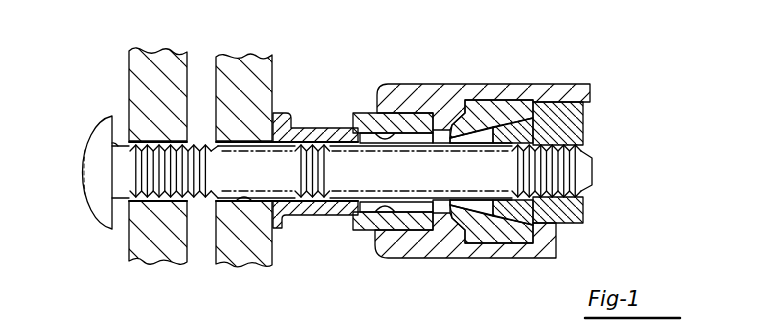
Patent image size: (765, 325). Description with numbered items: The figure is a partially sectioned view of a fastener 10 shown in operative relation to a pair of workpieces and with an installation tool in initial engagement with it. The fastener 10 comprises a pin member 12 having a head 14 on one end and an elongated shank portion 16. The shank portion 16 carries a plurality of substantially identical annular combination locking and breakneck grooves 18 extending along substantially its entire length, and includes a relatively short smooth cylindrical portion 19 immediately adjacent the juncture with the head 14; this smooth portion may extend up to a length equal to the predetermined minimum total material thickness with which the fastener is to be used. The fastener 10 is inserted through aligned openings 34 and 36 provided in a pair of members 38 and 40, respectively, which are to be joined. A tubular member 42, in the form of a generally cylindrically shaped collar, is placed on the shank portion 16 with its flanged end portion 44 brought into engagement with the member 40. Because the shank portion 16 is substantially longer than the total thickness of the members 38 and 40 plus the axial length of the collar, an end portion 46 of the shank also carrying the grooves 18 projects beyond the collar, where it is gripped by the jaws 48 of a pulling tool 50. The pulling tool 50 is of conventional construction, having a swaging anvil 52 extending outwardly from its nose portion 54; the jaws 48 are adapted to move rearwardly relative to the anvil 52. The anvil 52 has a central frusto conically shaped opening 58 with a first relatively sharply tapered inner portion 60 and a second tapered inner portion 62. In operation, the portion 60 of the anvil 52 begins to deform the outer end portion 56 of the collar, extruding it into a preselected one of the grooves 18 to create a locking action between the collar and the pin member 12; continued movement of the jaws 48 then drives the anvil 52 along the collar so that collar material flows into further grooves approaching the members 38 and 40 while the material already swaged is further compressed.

The fastener 10 is at (330, 60).
The pin member 12 is at (92, 208).
The head 14 is at (95, 128).
The shank portion 16 is at (195, 145).
The combination locking and breakneck grooves 18 is at (568, 136).
The smooth cylindrical portion 19 is at (120, 145).
The opening 34 is at (147, 198).
The opening 36 is at (240, 202).
The member 38 is at (136, 62).
The member 40 is at (262, 57).
The tubular member 42 is at (343, 97).
The flanged end portion 44 is at (280, 222).
The end portion 46 is at (573, 171).
The jaws 48 is at (532, 108).
The pulling tool 50 is at (562, 50).
The swaging anvil 52 is at (362, 113).
The nose portion 54 is at (368, 110).
The outer end portion 56 is at (348, 214).
The frusto conically shaped opening 58 is at (427, 133).
The first relatively sharply tapered inner portion 60 is at (410, 133).
The second tapered inner portion 62 is at (395, 204).